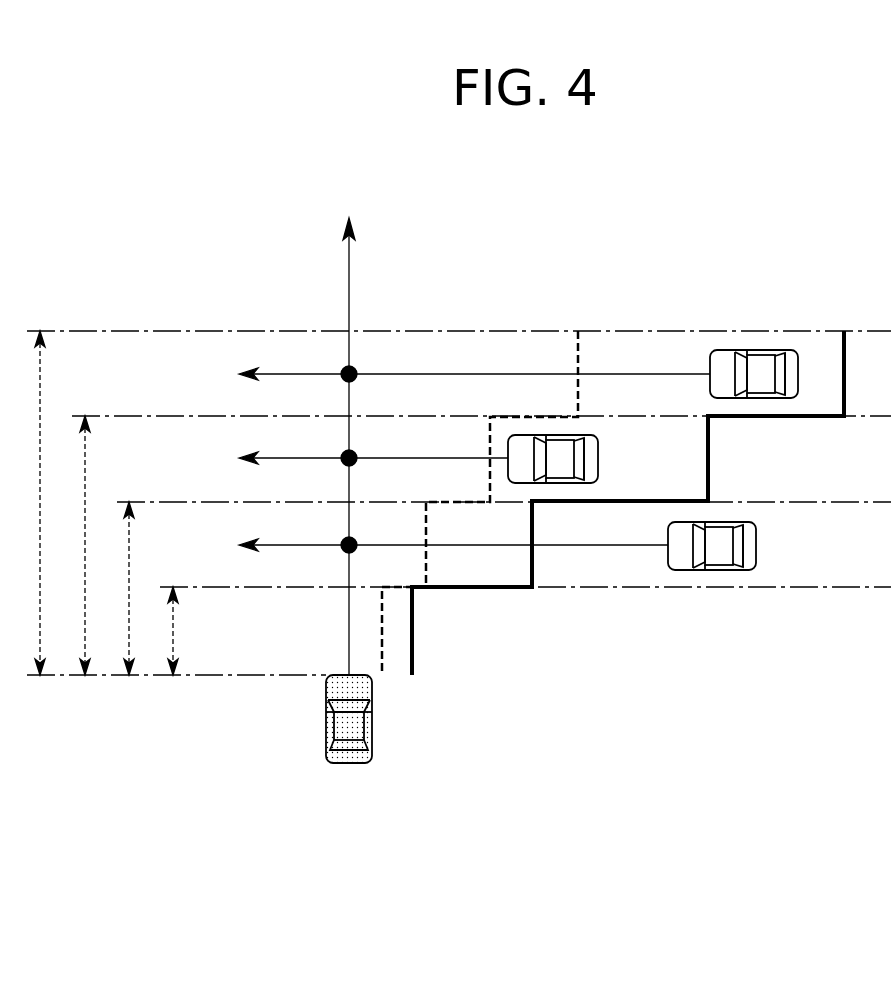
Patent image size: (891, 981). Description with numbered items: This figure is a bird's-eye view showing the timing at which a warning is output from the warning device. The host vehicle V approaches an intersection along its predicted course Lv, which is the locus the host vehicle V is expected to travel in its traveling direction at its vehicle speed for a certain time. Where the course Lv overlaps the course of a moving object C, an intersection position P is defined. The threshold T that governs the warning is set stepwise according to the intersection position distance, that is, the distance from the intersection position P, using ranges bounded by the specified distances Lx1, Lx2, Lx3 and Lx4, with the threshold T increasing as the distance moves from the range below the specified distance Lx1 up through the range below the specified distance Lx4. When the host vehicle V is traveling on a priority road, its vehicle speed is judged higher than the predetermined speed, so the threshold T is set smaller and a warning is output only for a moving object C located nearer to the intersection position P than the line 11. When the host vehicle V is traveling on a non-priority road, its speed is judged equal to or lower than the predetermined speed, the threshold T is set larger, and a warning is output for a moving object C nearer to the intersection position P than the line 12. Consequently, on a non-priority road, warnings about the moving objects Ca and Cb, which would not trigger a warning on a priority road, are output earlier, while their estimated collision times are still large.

The threshold T is at (259, 247).
The course of the host vehicle Lv is at (350, 253).
The line 11 is at (576, 356).
The line 12 is at (534, 560).
The intersection position P is at (357, 364).
The moving object Ca is at (777, 349).
The moving object Cb is at (598, 460).
The moving object C is at (756, 545).
The host vehicle V is at (320, 719).
The specified distance Lx1 is at (196, 631).
The specified distance Lx2 is at (152, 588).
The specified distance Lx3 is at (108, 545).
The specified distance Lx4 is at (63, 503).